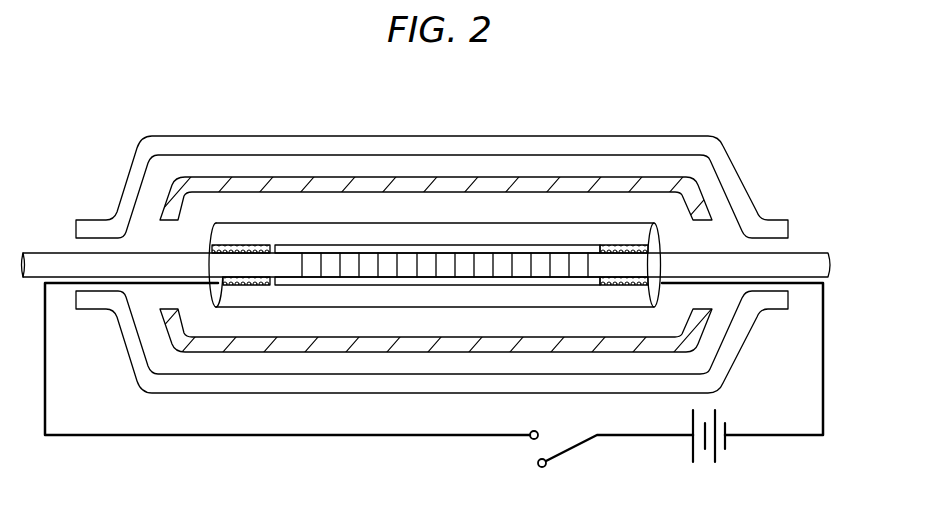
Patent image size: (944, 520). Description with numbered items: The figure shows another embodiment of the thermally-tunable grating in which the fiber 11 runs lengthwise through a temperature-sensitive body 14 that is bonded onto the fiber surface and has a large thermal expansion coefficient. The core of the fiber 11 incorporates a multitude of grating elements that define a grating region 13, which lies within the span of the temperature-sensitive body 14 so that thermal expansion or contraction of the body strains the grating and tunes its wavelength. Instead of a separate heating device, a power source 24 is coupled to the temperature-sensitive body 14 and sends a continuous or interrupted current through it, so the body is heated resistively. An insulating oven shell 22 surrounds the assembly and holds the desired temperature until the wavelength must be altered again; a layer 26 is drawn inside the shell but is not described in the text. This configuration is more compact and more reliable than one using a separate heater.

The fiber 11 is at (807, 249).
The grating region 13 is at (290, 268).
The temperature-sensitive body 14 is at (613, 230).
The insulating oven shell 22 is at (249, 147).
The insulating layer 26 is at (317, 185).
The power source 24 is at (778, 436).